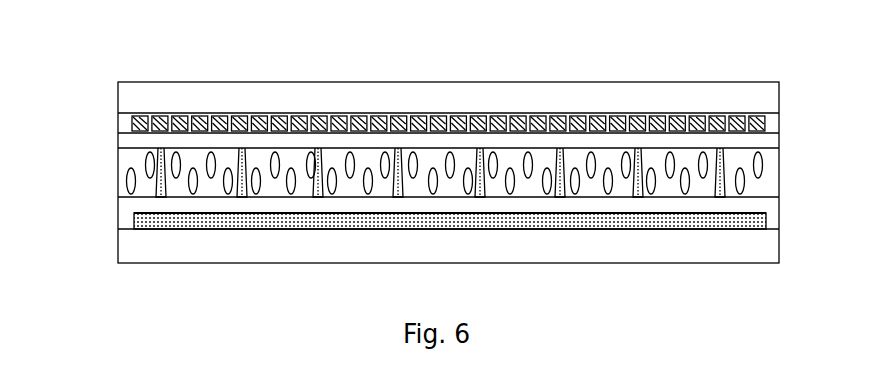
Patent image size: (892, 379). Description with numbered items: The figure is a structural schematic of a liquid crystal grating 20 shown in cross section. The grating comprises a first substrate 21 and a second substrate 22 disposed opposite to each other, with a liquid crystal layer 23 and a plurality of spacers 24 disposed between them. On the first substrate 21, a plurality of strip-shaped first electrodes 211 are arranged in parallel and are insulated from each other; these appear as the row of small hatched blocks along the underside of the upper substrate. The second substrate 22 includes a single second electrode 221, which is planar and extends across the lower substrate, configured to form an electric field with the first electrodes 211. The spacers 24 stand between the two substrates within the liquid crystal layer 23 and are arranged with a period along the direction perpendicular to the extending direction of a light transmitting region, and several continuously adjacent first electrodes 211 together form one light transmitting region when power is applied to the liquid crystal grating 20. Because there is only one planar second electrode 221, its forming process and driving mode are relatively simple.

The liquid crystal grating 20 is at (167, 48).
The first substrate 21 is at (780, 82).
The first electrodes 211 is at (131, 120).
The spacers 24 is at (156, 151).
The liquid crystal layer 23 is at (118, 186).
The second substrate 22 is at (780, 197).
The second electrode 221 is at (136, 224).